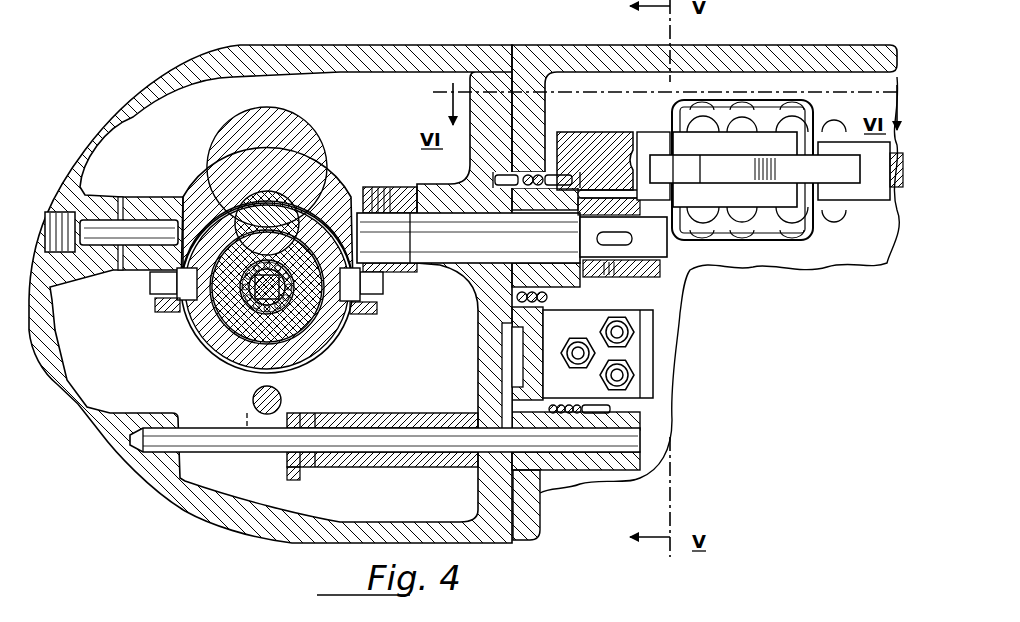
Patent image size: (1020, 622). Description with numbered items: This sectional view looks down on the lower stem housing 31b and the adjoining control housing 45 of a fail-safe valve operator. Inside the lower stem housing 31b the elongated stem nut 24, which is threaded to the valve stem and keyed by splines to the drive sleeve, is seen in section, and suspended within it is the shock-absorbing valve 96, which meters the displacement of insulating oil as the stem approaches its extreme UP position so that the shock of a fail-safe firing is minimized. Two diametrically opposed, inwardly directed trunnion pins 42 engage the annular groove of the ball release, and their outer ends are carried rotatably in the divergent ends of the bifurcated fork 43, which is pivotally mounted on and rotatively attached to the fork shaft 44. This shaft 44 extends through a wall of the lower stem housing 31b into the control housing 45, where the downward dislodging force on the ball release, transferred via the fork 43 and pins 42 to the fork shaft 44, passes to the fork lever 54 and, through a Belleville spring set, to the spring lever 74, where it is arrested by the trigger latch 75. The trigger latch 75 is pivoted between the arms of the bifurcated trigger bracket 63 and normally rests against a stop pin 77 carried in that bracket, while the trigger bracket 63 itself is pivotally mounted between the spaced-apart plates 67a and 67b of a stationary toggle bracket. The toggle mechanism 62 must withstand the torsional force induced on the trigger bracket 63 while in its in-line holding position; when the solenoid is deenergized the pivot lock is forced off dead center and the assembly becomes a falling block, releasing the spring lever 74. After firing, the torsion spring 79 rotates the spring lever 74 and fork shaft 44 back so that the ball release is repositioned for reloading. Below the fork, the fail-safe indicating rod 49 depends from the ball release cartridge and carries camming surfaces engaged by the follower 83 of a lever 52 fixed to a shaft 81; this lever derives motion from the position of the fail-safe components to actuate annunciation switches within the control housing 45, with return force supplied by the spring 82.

The lower stem housing 31b is at (407, 57).
The control housing 45 is at (572, 58).
The bifurcated fork 43 is at (323, 172).
The fork shaft 44 is at (397, 225).
The trunnion pins 42 is at (185, 300).
The elongated stem nut 24 is at (235, 310).
The shock-absorbing valve 96 is at (258, 320).
The fail-safe indicating rod 49 is at (283, 398).
The follower 83 is at (245, 412).
The shaft 81 is at (407, 435).
The lever 52 is at (305, 477).
The fork lever 54 is at (657, 322).
The torsion spring 79 is at (548, 300).
The spring 82 is at (570, 470).
The spring lever 74 is at (587, 150).
The trigger latch 75 is at (660, 168).
The stop pin 77 is at (700, 165).
The toggle bracket plate 67a is at (755, 110).
The toggle bracket plate 67b is at (735, 232).
The bifurcated trigger bracket 63 is at (783, 140).
The toggle mechanism 62 is at (757, 250).